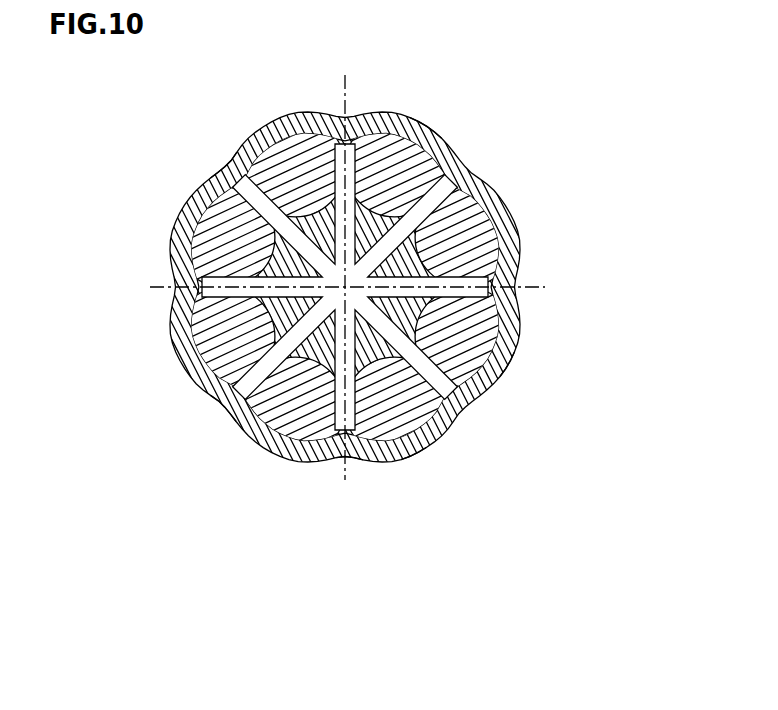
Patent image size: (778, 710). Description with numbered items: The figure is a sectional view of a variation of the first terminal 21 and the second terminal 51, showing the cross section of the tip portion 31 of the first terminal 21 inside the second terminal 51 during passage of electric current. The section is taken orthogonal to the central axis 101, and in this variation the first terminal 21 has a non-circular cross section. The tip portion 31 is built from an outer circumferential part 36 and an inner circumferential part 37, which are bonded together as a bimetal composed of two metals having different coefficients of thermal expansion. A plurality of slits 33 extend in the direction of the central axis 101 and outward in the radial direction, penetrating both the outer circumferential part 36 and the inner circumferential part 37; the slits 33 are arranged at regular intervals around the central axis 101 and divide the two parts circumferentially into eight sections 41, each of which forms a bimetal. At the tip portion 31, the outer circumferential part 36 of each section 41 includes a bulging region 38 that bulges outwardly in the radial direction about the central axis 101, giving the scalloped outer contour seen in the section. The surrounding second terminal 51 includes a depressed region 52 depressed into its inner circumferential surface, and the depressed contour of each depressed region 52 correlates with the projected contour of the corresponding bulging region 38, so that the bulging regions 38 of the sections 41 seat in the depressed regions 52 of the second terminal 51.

The central axis 101 is at (190, 249).
The first terminal 21 is at (441, 407).
The tip portion 31 is at (427, 147).
The slits 33 is at (230, 378).
The outer circumferential part 36 is at (480, 318).
The inner circumferential part 37 is at (500, 365).
The bulging region 38 is at (413, 445).
The sections 41 is at (291, 122).
The second terminal 51 is at (231, 171).
The depressed region 52 is at (384, 432).